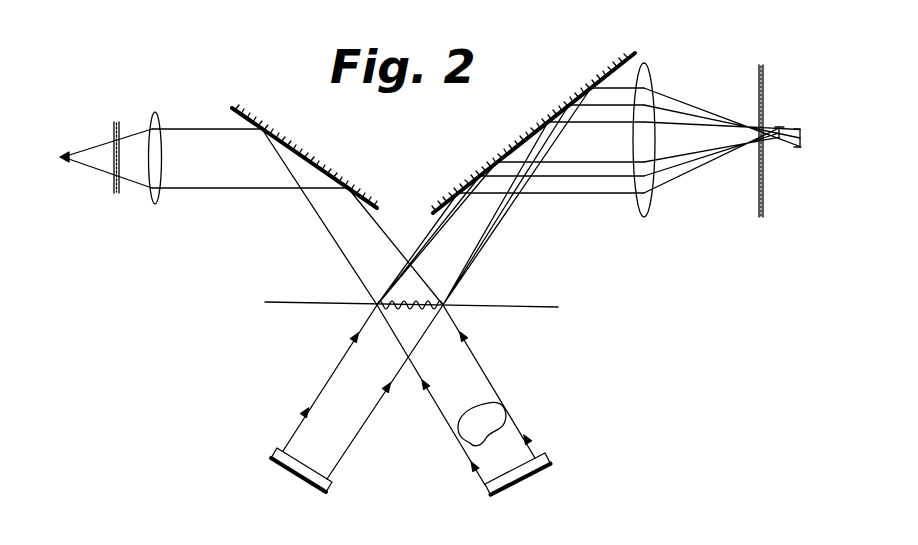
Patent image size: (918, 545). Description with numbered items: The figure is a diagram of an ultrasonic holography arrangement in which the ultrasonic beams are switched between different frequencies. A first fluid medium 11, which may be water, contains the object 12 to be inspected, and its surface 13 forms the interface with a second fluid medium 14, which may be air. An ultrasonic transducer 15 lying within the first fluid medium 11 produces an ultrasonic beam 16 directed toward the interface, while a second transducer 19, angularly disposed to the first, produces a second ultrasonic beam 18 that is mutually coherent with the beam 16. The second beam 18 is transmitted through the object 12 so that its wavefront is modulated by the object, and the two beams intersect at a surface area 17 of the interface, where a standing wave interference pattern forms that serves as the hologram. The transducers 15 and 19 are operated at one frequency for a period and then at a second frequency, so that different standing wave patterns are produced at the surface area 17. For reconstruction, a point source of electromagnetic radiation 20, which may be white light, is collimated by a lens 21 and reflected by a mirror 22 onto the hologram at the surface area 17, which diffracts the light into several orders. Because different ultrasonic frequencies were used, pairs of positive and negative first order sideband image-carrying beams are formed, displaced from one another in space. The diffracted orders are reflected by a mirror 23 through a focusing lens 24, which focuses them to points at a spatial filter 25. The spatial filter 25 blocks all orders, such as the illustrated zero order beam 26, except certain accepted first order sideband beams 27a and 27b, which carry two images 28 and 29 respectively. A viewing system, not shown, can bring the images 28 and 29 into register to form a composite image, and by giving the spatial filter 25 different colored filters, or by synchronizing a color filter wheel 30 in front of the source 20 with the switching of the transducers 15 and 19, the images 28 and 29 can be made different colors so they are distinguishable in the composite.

The first fluid medium 11 is at (327, 352).
The object 12 is at (500, 422).
The surface 13 is at (305, 302).
The second fluid medium 14 is at (293, 233).
The ultrasonic transducer 15 is at (271, 457).
The ultrasonic beam 16 is at (349, 453).
The surface area 17 is at (420, 302).
The second ultrasonic beam 18 is at (494, 388).
The transducer 19 is at (536, 460).
The point source of electromagnetic radiation 20 is at (64, 154).
The collimating lens 21 is at (159, 121).
The reflecting mirror 22 is at (326, 172).
The mirror 23 is at (580, 96).
The focusing lens 24 is at (650, 82).
The spatial filter 25 is at (763, 82).
The zero order beam 26 is at (762, 151).
The first order sideband beam 27a is at (759, 125).
The first order sideband beam 27b is at (758, 147).
The image 28 is at (782, 124).
The image 29 is at (801, 150).
The color filter wheel 30 is at (116, 122).